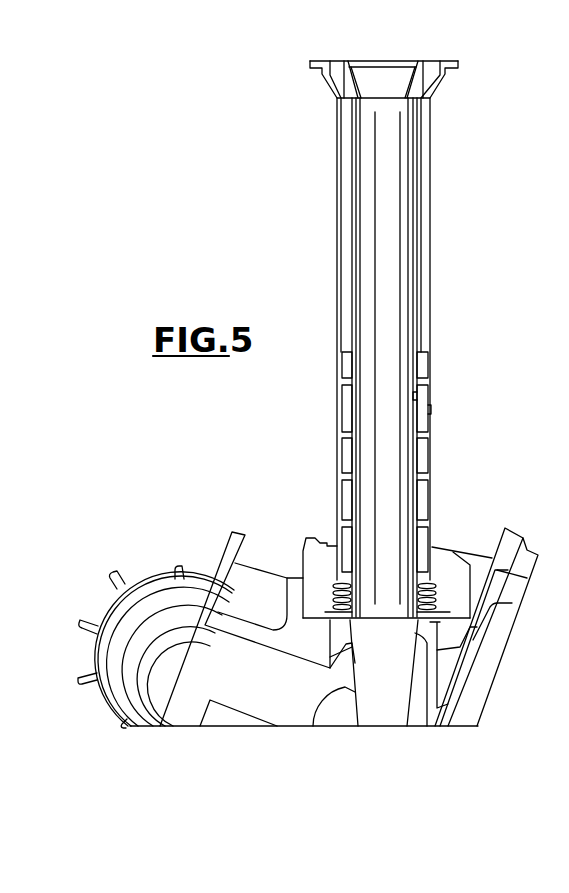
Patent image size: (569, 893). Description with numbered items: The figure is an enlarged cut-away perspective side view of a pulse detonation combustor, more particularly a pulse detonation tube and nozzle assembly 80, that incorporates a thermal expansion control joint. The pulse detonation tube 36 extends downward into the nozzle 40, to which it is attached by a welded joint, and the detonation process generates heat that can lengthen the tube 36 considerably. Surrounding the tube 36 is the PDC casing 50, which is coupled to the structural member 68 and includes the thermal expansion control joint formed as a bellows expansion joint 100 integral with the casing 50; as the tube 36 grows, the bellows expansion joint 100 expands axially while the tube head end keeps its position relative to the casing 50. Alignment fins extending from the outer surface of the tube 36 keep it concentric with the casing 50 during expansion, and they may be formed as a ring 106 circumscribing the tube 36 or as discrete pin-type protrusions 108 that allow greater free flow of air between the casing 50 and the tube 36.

The pulse detonation tube 36 is at (398, 194).
The PDC casing 50 is at (431, 246).
The ring 106 is at (423, 384).
The discrete pin-type protrusions 108 is at (422, 410).
The structural member 68 is at (453, 552).
The bellows expansion joint 100 is at (333, 603).
The nozzle 40 is at (383, 710).
The pulse detonation tube and nozzle assembly 80 is at (257, 468).